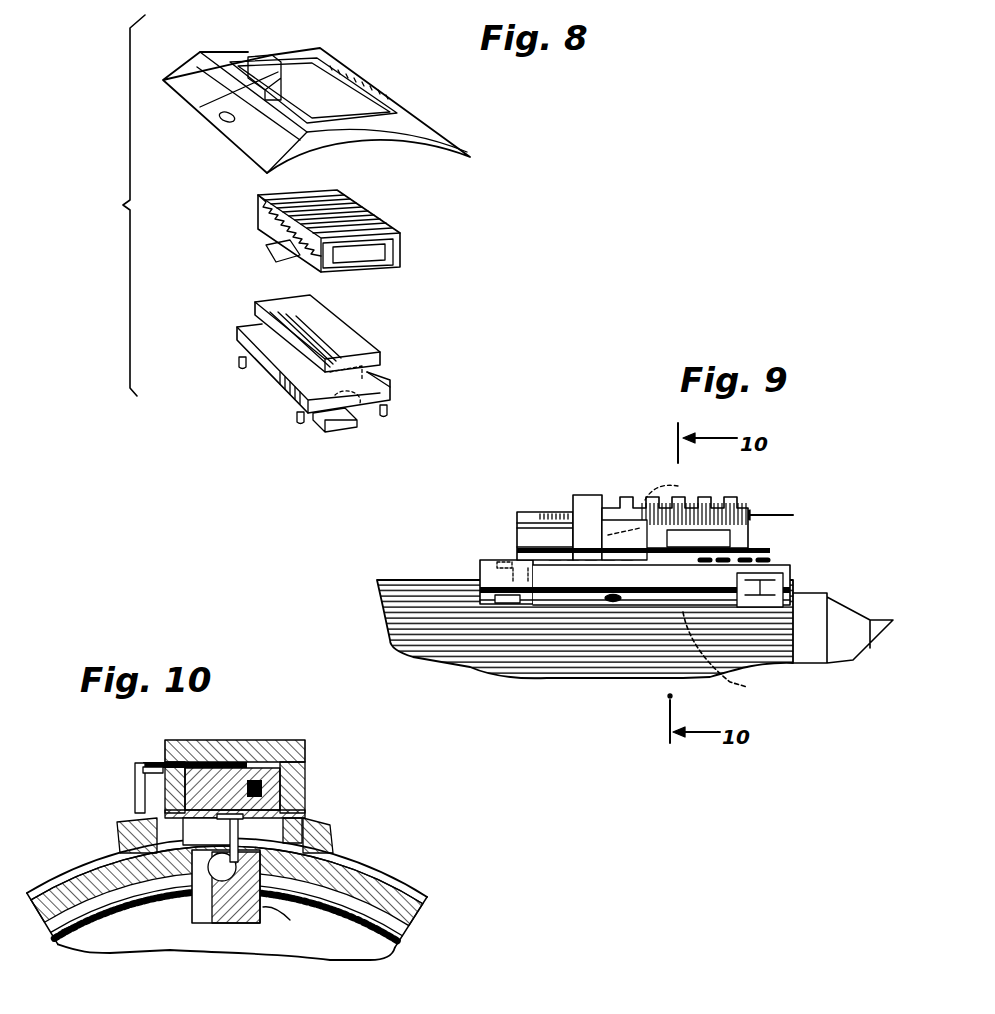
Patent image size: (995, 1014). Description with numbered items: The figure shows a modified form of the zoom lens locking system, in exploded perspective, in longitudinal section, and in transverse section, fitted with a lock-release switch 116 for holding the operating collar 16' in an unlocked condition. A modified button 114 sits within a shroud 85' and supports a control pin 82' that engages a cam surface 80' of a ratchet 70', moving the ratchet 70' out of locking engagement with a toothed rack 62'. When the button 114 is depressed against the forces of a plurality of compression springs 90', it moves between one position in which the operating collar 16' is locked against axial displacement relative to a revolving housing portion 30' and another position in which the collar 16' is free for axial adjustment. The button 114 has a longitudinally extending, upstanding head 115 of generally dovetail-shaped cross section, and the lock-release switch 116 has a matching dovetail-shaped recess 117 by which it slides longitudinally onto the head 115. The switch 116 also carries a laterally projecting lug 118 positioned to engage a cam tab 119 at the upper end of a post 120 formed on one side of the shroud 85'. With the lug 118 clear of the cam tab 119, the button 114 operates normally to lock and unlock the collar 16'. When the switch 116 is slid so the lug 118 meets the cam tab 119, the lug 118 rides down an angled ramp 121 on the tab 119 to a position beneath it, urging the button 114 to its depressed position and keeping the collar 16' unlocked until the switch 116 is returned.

In FIG. 9, the operating collar 16' is at (635, 617).
In FIG. 10, the operating collar 16' is at (243, 893).
In FIG. 10, the revolving housing portion 30' is at (42, 934).
In FIG. 10, the toothed rack 62' is at (226, 947).
In FIG. 10, the ratchet 70' is at (299, 929).
In FIG. 10, the cam surface 80' is at (227, 899).
In FIG. 8, the control pin 82' is at (361, 416).
In FIG. 9, the control pin 82' is at (728, 654).
In FIG. 10, the control pin 82' is at (274, 832).
In FIG. 8, the shroud 85' is at (324, 110).
In FIG. 9, the shroud 85' is at (783, 590).
In FIG. 10, the shroud 85' is at (121, 835).
In FIG. 8, the compression springs 90' is at (290, 385).
In FIG. 9, the compression springs 90' is at (558, 599).
In FIG. 10, the compression springs 90' is at (333, 835).
In FIG. 8, the modified button 114 is at (387, 393).
In FIG. 9, the modified button 114 is at (710, 563).
In FIG. 8, the head 115 is at (347, 332).
In FIG. 9, the head 115 is at (527, 510).
In FIG. 10, the head 115 is at (283, 778).
In FIG. 8, the lock-release switch 116 is at (353, 200).
In FIG. 9, the lock-release switch 116 is at (710, 522).
In FIG. 10, the lock-release switch 116 is at (237, 743).
In FIG. 8, the dovetail-shaped recess 117 is at (343, 248).
In FIG. 8, the lug 118 is at (270, 250).
In FIG. 9, the lug 118 is at (728, 542).
In FIG. 8, the cam tab 119 is at (263, 60).
In FIG. 9, the cam tab 119 is at (597, 500).
In FIG. 10, the cam tab 119 is at (147, 767).
In FIG. 8, the post 120 is at (206, 111).
In FIG. 10, the post 120 is at (133, 795).
In FIG. 9, the ramp 121 is at (654, 520).